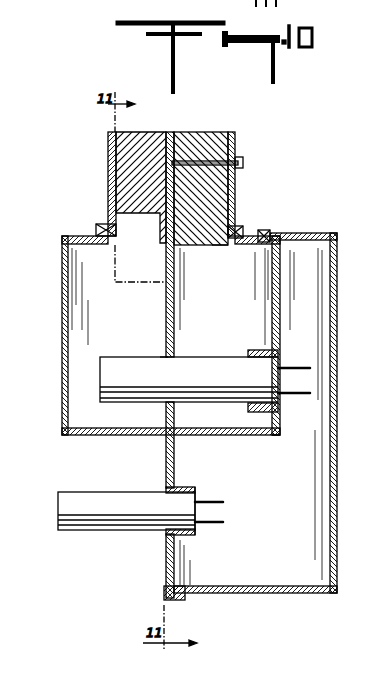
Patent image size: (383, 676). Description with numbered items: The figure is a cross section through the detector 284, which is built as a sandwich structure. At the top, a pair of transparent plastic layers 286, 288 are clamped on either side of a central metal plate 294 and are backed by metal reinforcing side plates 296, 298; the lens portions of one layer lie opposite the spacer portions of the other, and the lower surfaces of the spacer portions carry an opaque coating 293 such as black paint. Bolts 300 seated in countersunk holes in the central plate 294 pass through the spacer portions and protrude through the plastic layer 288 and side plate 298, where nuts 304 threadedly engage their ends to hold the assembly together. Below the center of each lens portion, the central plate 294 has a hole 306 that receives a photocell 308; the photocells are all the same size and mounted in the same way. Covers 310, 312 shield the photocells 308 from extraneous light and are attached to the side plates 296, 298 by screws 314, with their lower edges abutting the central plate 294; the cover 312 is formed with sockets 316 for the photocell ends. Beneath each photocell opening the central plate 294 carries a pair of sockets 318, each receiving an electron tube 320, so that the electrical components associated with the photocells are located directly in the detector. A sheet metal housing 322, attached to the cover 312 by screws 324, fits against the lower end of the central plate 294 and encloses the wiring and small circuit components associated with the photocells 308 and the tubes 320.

The detector 284 is at (166, 347).
The transparent plastic layer 286 is at (140, 133).
The transparent plastic layer 288 is at (185, 140).
The opaque coating 293 is at (213, 246).
The central metal plate 294 is at (170, 132).
The side plate 296 is at (108, 133).
The side plate 298 is at (236, 200).
The bolt 300 is at (244, 164).
The nut 304 is at (242, 157).
The hole 306 is at (167, 351).
The photocell 308 is at (220, 380).
The cover 310 is at (62, 262).
The cover 312 is at (280, 434).
The screw 314 is at (100, 225).
The socket 316 is at (256, 350).
The socket 318 is at (190, 490).
The electron tube 320 is at (108, 513).
The sheet metal housing 322 is at (302, 593).
The screw 324 is at (266, 231).